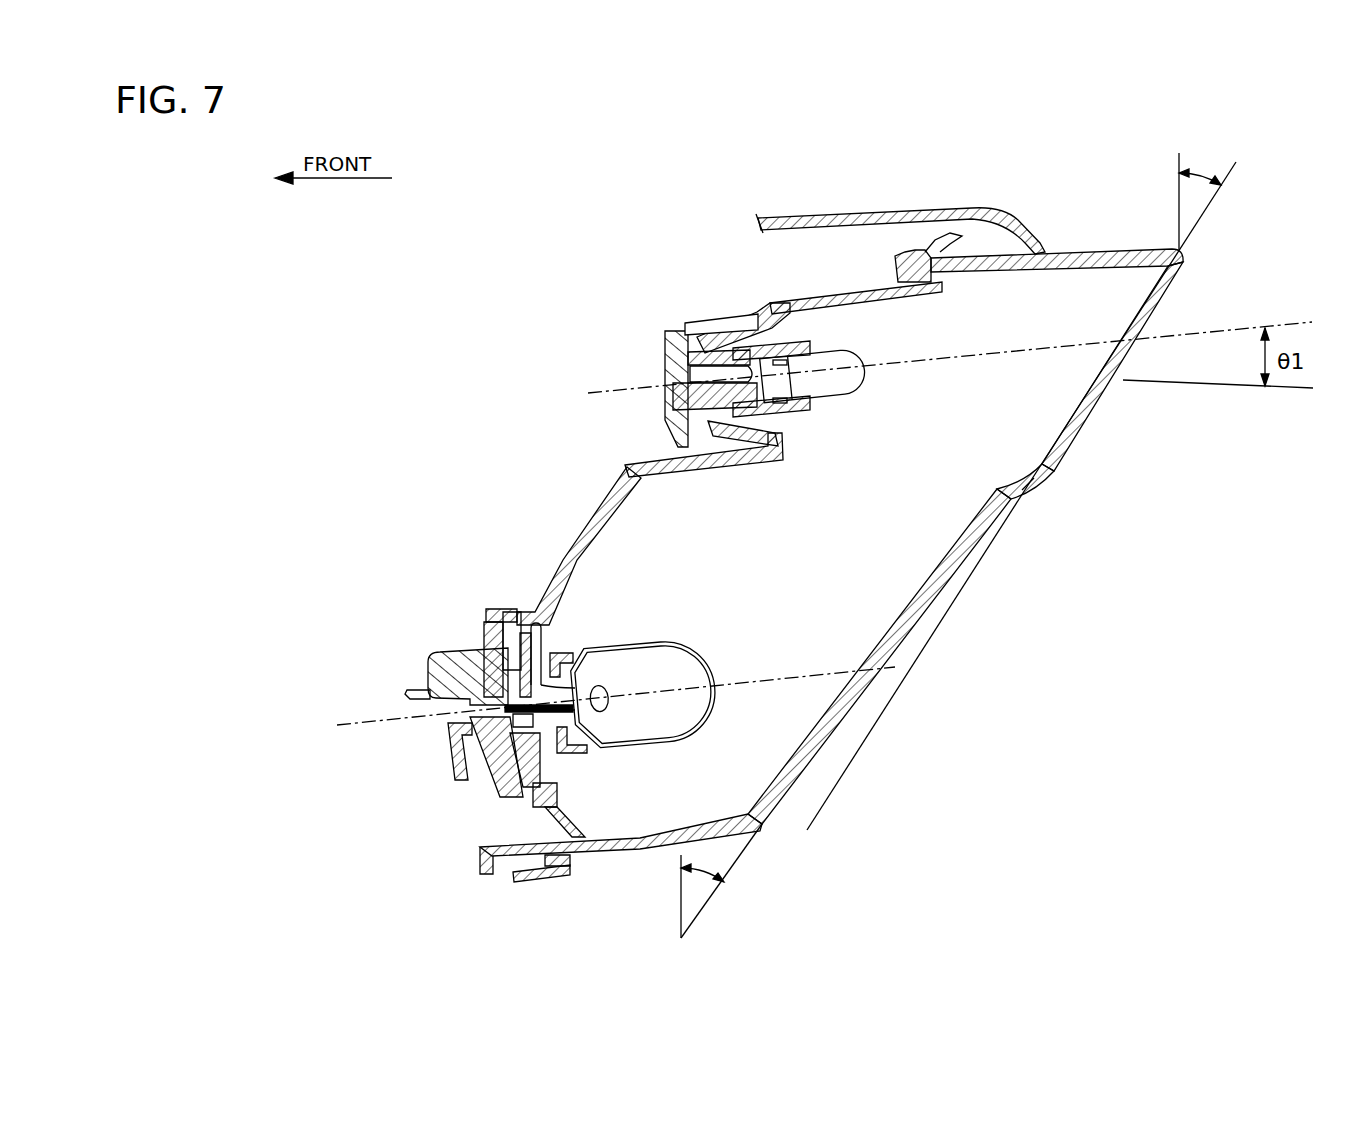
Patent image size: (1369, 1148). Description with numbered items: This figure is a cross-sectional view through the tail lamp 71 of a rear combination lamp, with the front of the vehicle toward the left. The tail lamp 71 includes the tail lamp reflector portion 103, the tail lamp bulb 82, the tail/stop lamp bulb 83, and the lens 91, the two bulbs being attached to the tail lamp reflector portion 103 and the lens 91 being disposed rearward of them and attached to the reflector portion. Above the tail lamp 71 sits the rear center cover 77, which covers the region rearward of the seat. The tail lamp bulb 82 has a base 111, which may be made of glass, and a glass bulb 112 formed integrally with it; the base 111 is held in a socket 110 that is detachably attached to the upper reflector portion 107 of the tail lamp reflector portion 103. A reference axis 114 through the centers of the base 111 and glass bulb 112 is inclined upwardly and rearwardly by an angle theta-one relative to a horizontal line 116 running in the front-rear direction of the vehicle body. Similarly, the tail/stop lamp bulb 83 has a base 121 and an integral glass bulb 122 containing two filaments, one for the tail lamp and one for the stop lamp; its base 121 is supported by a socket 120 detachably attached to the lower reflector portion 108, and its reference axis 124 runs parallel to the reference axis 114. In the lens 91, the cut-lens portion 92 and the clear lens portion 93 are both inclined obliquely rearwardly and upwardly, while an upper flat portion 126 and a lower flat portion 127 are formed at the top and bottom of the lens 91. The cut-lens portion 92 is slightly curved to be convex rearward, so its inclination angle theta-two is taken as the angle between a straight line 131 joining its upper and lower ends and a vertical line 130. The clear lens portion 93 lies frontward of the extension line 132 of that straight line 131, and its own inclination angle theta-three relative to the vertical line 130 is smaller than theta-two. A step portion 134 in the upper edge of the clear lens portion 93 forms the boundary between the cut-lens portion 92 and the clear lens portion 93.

The tail lamp 71 is at (863, 545).
The rear center cover 77 is at (932, 210).
The tail lamp bulb 82 is at (827, 337).
The tail/stop lamp bulb 83 is at (641, 745).
The lens 91 is at (1053, 466).
The cut-lens portion 92 is at (1158, 303).
The clear lens portion 93 is at (955, 563).
The tail lamp reflector portion 103 is at (623, 468).
The upper reflector portion 107 is at (851, 293).
The lower reflector portion 108 is at (575, 553).
The socket 110 is at (700, 338).
The base 111 is at (722, 333).
The glass bulb 112 is at (835, 355).
The reference axis 114 is at (633, 389).
The horizontal line 116 is at (1283, 387).
The socket 120 is at (432, 668).
The base 121 is at (518, 605).
The glass bulb 122 is at (613, 644).
The reference axis 124 is at (373, 720).
The upper flat portion 126 is at (1053, 252).
The lower flat portion 127 is at (633, 853).
The vertical line 130 is at (1179, 157).
The straight line 131 is at (1238, 165).
The extension line 132 is at (807, 830).
The step portion 134 is at (1020, 485).